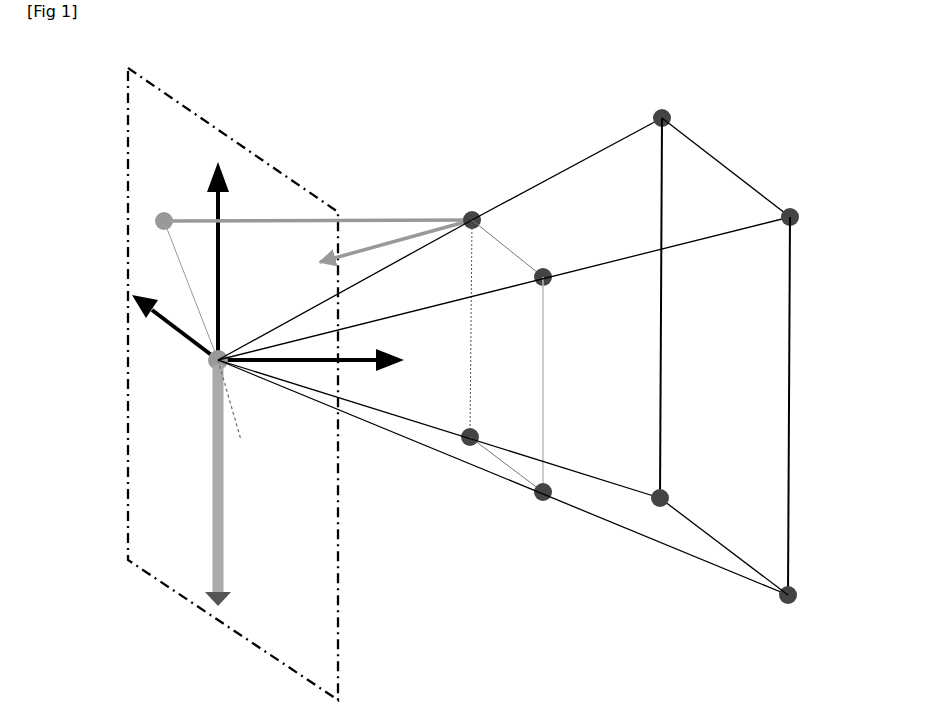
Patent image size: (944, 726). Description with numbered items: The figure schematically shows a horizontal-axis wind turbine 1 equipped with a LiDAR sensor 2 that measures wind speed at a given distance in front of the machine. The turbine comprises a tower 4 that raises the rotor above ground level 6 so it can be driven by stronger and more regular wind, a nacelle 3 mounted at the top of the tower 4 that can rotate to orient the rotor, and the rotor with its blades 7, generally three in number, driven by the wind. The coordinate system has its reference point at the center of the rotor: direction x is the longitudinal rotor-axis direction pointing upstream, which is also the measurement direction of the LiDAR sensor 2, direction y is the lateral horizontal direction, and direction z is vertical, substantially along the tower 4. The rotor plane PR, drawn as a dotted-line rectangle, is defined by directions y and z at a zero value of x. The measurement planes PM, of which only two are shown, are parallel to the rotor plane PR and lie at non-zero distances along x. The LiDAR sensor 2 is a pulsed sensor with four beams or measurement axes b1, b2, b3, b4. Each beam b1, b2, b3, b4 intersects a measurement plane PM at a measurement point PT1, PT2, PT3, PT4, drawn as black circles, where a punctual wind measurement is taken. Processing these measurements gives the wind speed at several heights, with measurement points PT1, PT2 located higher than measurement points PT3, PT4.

The wind turbine 1 is at (233, 268).
The LiDAR sensor 2 is at (202, 362).
The nacelle 3 is at (216, 382).
The tower 4 is at (215, 498).
The ground level 6 is at (209, 591).
The blades 7 is at (243, 428).
The rotor plane PR is at (146, 582).
The measurement point PT1 is at (460, 212).
The measurement point PT2 is at (551, 272).
The measurement point PT3 is at (541, 505).
The measurement point PT4 is at (463, 430).
The beam b1 is at (512, 190).
The beam b2 is at (736, 234).
The beam b3 is at (627, 537).
The beam b4 is at (412, 427).
The measurement plane PM is at (514, 400).